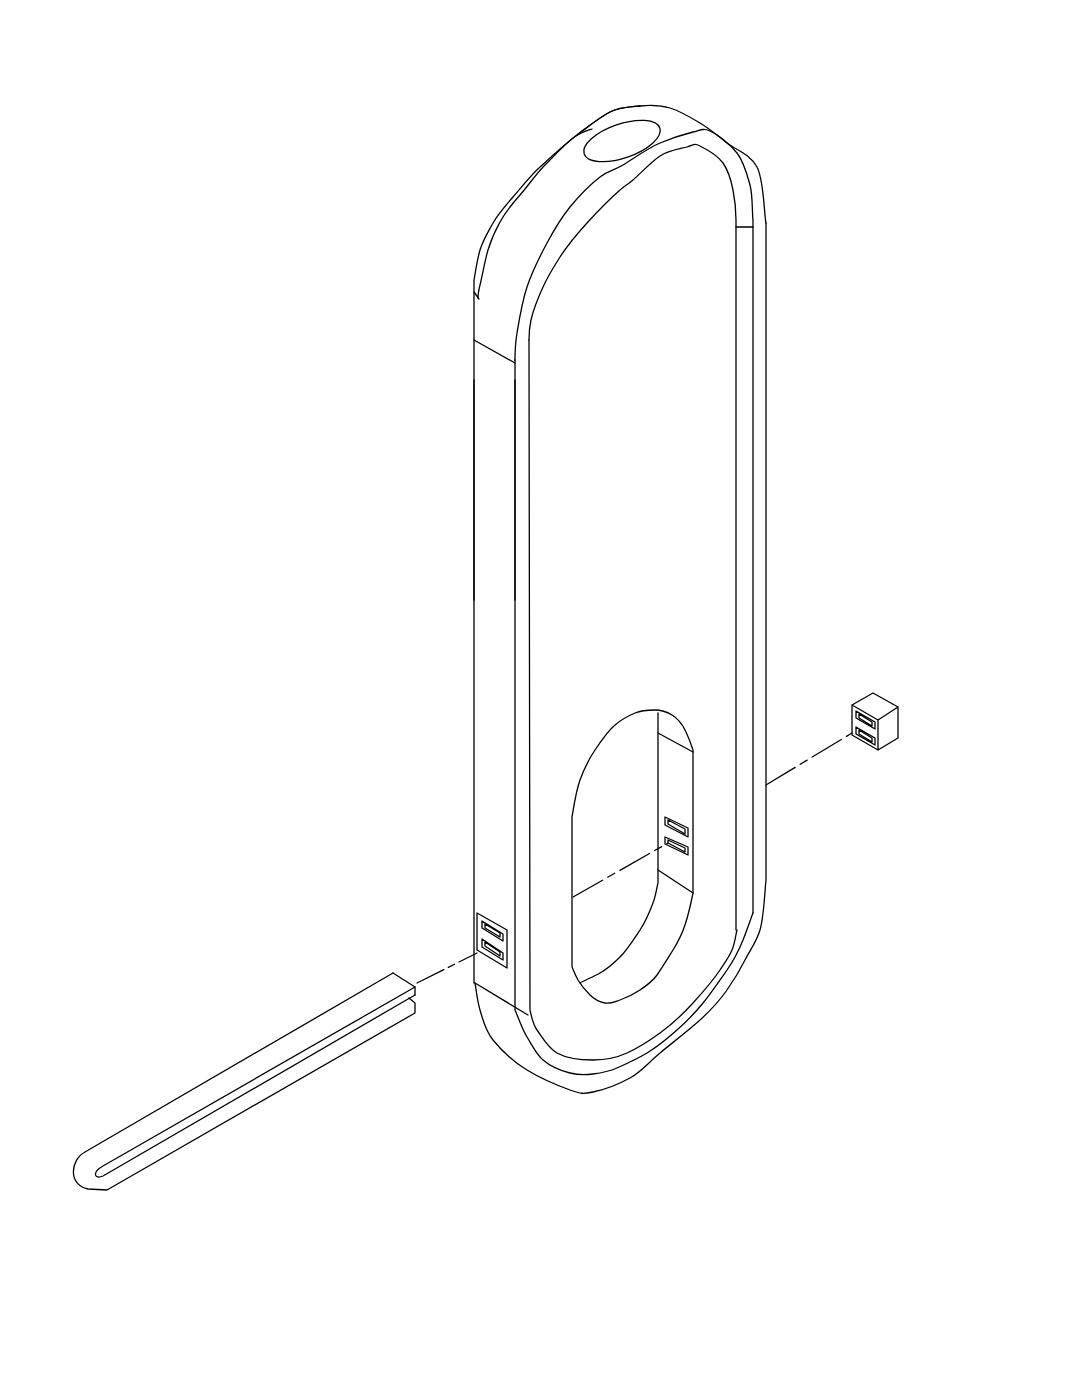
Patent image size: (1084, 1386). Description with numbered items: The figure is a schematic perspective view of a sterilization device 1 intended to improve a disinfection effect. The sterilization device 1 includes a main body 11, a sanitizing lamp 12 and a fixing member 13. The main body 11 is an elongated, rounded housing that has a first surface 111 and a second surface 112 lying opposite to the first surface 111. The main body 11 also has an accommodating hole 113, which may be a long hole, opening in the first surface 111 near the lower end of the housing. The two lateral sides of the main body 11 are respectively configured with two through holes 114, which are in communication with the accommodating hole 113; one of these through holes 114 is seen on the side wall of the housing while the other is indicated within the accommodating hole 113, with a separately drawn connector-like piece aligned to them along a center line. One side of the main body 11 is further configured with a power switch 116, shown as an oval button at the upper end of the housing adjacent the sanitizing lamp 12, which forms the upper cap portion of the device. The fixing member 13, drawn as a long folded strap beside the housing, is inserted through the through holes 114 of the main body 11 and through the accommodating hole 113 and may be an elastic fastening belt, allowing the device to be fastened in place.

The sterilization device 1 is at (400, 230).
The main body 11 is at (492, 447).
The first surface 111 is at (702, 450).
The second surface 112 is at (455, 606).
The accommodating hole 113 is at (607, 942).
The through holes 114 is at (690, 831).
The power switch 116 is at (627, 135).
The sanitizing lamp 12 is at (513, 200).
The fixing member 13 is at (277, 1048).